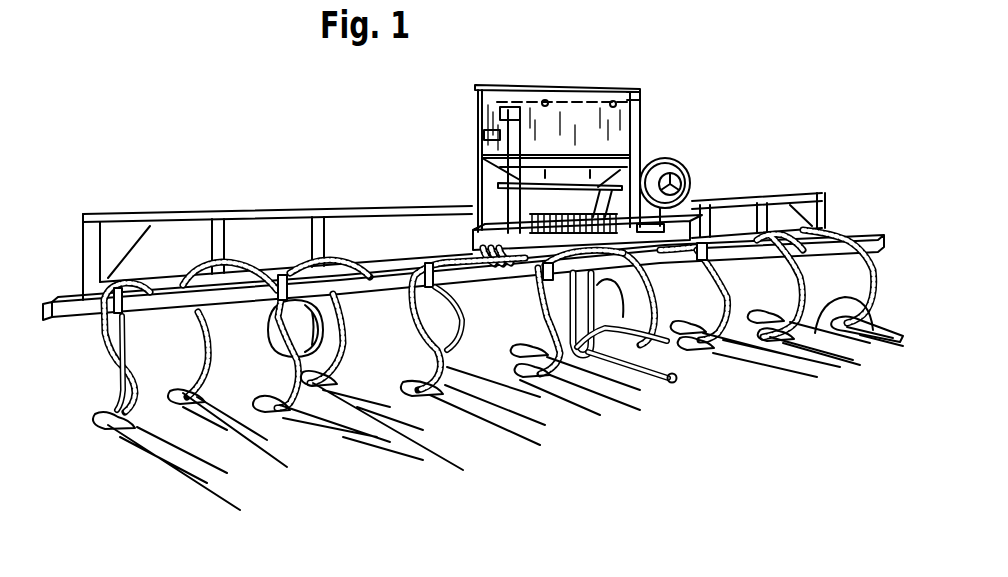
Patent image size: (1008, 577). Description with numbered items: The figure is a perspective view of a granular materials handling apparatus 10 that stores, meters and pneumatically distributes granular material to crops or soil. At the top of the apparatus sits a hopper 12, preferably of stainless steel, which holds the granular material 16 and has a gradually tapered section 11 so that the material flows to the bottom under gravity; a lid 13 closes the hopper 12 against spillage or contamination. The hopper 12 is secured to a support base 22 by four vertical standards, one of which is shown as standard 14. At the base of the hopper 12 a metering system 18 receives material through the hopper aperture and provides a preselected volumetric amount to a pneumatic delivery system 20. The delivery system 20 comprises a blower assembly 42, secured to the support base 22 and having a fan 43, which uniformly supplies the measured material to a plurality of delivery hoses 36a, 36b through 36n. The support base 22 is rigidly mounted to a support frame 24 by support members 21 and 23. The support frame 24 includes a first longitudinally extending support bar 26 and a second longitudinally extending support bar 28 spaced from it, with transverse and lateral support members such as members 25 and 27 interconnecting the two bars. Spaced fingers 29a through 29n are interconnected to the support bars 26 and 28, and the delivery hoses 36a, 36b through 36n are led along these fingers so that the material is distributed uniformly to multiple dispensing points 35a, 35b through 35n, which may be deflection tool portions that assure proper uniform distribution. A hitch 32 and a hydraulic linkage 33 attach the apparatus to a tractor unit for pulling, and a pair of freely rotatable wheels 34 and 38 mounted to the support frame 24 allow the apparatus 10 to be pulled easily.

The granular materials handling apparatus 10 is at (806, 99).
The gradually tapered section 11 is at (497, 152).
The hopper 12 is at (641, 92).
The lid 13 is at (493, 84).
The vertical standard 14 is at (640, 125).
The granular material 16 is at (487, 137).
The metering system 18 is at (533, 193).
The pneumatic delivery system 20 is at (700, 187).
The support member 21 is at (521, 262).
The support base 22 is at (440, 232).
The support member 23 is at (672, 256).
The support frame 24 is at (253, 204).
The support member 25 is at (312, 235).
The first longitudinally extending support bar 26 is at (343, 218).
The support member 27 is at (143, 262).
The second longitudinally extending support bar 28 is at (80, 298).
The spaced finger 29a is at (122, 397).
The spaced finger 29n is at (817, 333).
The hitch 32 is at (665, 385).
The hydraulic linkage 33 is at (600, 360).
The freely rotatable wheel 34 is at (282, 362).
The dispensing point 35a is at (137, 447).
The dispensing point 35b is at (197, 407).
The dispensing point 35n is at (873, 330).
The delivery hose 36a is at (130, 387).
The delivery hose 36b is at (212, 340).
The delivery hose 36n is at (857, 230).
The freely rotatable wheel 38 is at (597, 285).
The blower assembly 42 is at (692, 172).
The fan 43 is at (667, 175).